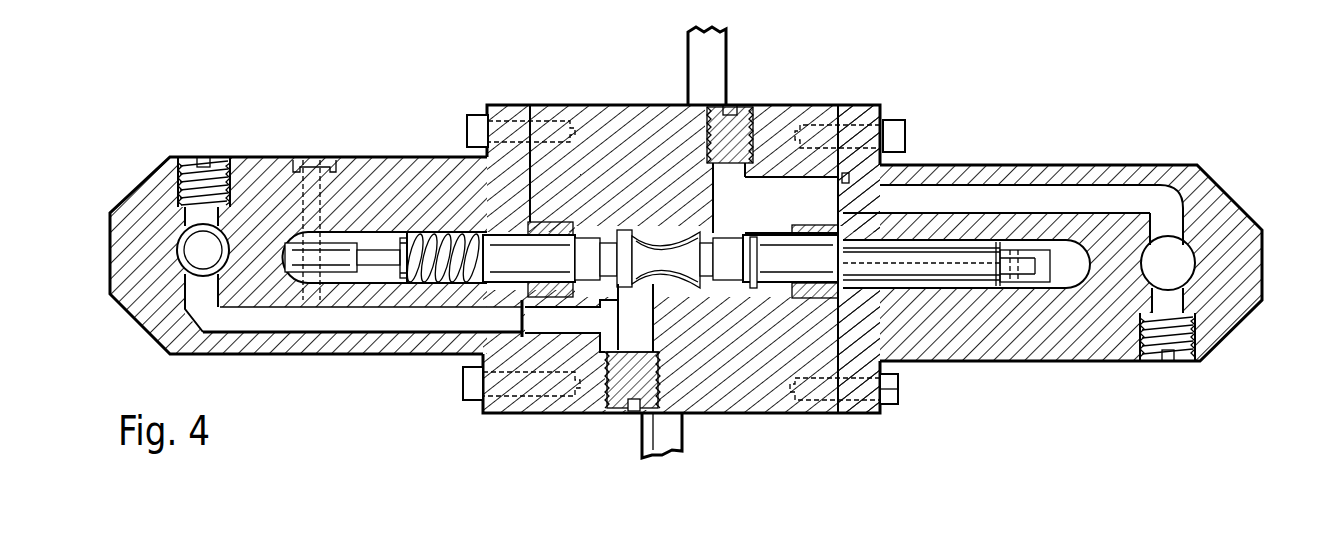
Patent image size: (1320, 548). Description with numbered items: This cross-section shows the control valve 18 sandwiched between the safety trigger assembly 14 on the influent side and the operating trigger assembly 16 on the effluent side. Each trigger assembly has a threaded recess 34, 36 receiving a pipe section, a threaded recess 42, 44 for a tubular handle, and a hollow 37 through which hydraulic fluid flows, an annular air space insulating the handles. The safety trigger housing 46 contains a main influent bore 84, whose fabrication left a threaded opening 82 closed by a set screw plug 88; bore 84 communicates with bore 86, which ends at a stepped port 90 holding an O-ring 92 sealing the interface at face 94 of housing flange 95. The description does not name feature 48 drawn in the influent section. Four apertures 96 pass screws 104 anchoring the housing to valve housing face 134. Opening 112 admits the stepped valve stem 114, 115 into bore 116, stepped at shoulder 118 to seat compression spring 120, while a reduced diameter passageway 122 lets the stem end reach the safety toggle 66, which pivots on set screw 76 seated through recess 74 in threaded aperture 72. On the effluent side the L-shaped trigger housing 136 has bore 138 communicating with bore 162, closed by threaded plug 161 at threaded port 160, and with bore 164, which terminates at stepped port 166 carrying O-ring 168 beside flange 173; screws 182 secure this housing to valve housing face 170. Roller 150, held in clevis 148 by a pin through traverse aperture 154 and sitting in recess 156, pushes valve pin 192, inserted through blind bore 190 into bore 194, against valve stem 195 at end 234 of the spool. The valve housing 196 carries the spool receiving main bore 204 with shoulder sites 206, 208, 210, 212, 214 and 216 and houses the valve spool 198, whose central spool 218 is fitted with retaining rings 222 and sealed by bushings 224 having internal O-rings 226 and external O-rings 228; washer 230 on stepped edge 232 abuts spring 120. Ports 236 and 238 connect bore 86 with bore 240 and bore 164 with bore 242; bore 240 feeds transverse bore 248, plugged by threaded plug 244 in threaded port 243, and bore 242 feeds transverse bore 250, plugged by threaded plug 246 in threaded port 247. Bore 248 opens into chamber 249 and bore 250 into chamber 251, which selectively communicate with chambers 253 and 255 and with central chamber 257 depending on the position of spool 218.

The safety trigger assembly 14 is at (135, 180).
The operating trigger assembly 16 is at (1108, 157).
The control valve 18 is at (750, 425).
The threaded recess 34 is at (178, 263).
The threaded recess 36 is at (1195, 263).
The hollow of pipe section 37 is at (182, 246).
The threaded recess 42 is at (150, 285).
The threaded recess 44 is at (1205, 283).
The safety trigger housing 46 is at (152, 319).
The ball check 48 is at (192, 261).
The safety toggle 66 is at (325, 300).
The threaded aperture 72 is at (305, 160).
The recess 74 is at (343, 240).
The set screw 76 is at (318, 160).
The threaded opening 82 is at (188, 157).
The main influent bore 84 is at (189, 306).
The bore 86 is at (349, 327).
The threaded set screw plug 88 is at (215, 163).
The stepped port 90 is at (450, 330).
The O-ring 92 is at (470, 340).
The housing face 94 is at (498, 105).
The housing flange 95 is at (492, 112).
The apertures 96 is at (460, 440).
The screws 104 is at (468, 386).
The opening 112 is at (520, 213).
The valve stem end 114 is at (385, 333).
The stepped valve stem 115 is at (521, 269).
The bore 116 is at (418, 240).
The shoulder 118 is at (393, 320).
The compression spring 120 is at (403, 310).
The reduced diameter passageway 122 is at (398, 235).
The valve housing face 134 is at (512, 413).
The trigger housing 136 is at (1167, 173).
The bore 138 is at (1155, 266).
The clevis 148 is at (1045, 250).
The roller 150 is at (1008, 258).
The traverse aperture 154 is at (1025, 245).
The recess 156 is at (1050, 277).
The threaded port 160 is at (1152, 365).
The threaded plug 161 is at (1187, 364).
The bore 162 is at (1153, 231).
The bore 164 is at (913, 202).
The stepped port 166 is at (862, 185).
The O-ring 168 is at (872, 100).
The valve housing face 170 is at (876, 406).
The flange 173 is at (884, 160).
The screws 182 is at (905, 130).
The blind bore 190 is at (857, 248).
The valve pin 192 is at (945, 276).
The bore 194 is at (975, 276).
The valve stem 195 is at (798, 266).
The valve housing 196 is at (627, 127).
The valve spool 198 is at (683, 231).
The spool receiving main bore 204 is at (653, 187).
The shoulder site 206 is at (778, 396).
The shoulder site 208 is at (760, 372).
The shoulder site 210 is at (705, 312).
The shoulder site 212 is at (690, 332).
The shoulder site 214 is at (602, 200).
The shoulder site 216 is at (592, 215).
The central spool 218 is at (643, 264).
The retaining rings 222 is at (545, 222).
The bushings 224 is at (553, 222).
The internal O-ring 226 is at (500, 362).
The external O-ring 228 is at (490, 392).
The washer 230 is at (445, 135).
The stepped edge 232 is at (505, 300).
The end 234 is at (897, 328).
The port 236 is at (447, 345).
The port 238 is at (882, 183).
The bore 240 is at (551, 329).
The bore 242 is at (771, 199).
The threaded port 243 is at (632, 412).
The threaded plug 244 is at (627, 408).
The threaded plug 246 is at (750, 187).
The threaded port 247 is at (722, 108).
The transverse bore 248 is at (621, 329).
The chamber 249 is at (650, 461).
The transverse bore 250 is at (718, 189).
The chamber 251 is at (715, 400).
The main bore chamber 253 is at (592, 372).
The main bore chamber 255 is at (812, 233).
The central main bore chamber 257 is at (680, 430).